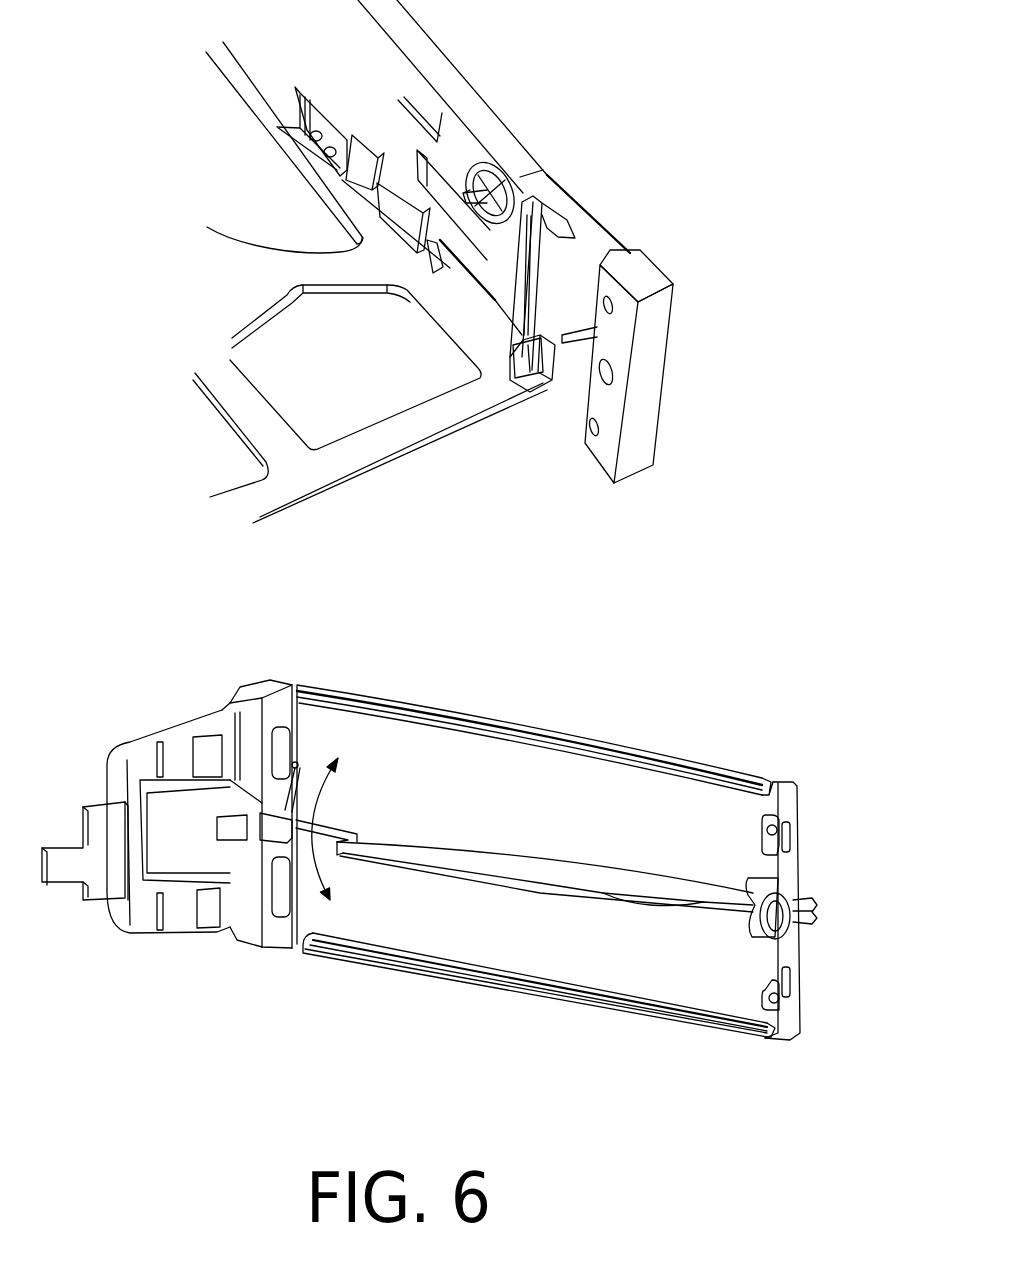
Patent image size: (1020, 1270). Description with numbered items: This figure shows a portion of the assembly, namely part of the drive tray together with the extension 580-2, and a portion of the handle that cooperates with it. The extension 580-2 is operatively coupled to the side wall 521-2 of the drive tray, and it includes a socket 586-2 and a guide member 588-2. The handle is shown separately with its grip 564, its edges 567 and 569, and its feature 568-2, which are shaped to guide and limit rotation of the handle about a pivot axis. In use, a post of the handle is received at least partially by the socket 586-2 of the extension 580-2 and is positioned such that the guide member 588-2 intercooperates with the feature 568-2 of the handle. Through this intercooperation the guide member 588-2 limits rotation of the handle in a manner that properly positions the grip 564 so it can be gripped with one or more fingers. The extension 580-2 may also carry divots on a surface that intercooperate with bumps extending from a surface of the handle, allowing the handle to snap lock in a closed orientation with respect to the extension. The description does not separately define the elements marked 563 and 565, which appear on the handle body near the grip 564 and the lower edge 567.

The side wall 521-2 is at (470, 102).
The extension 580-2 is at (595, 233).
The guide member 588-2 is at (567, 368).
The socket 586-2 is at (610, 380).
The feature 568-2 is at (297, 766).
The edge 569 is at (513, 725).
The carrier plate 563 is at (483, 792).
The grip 564 is at (513, 867).
The spring arm edge 565 is at (493, 880).
The edge 567 is at (603, 1007).